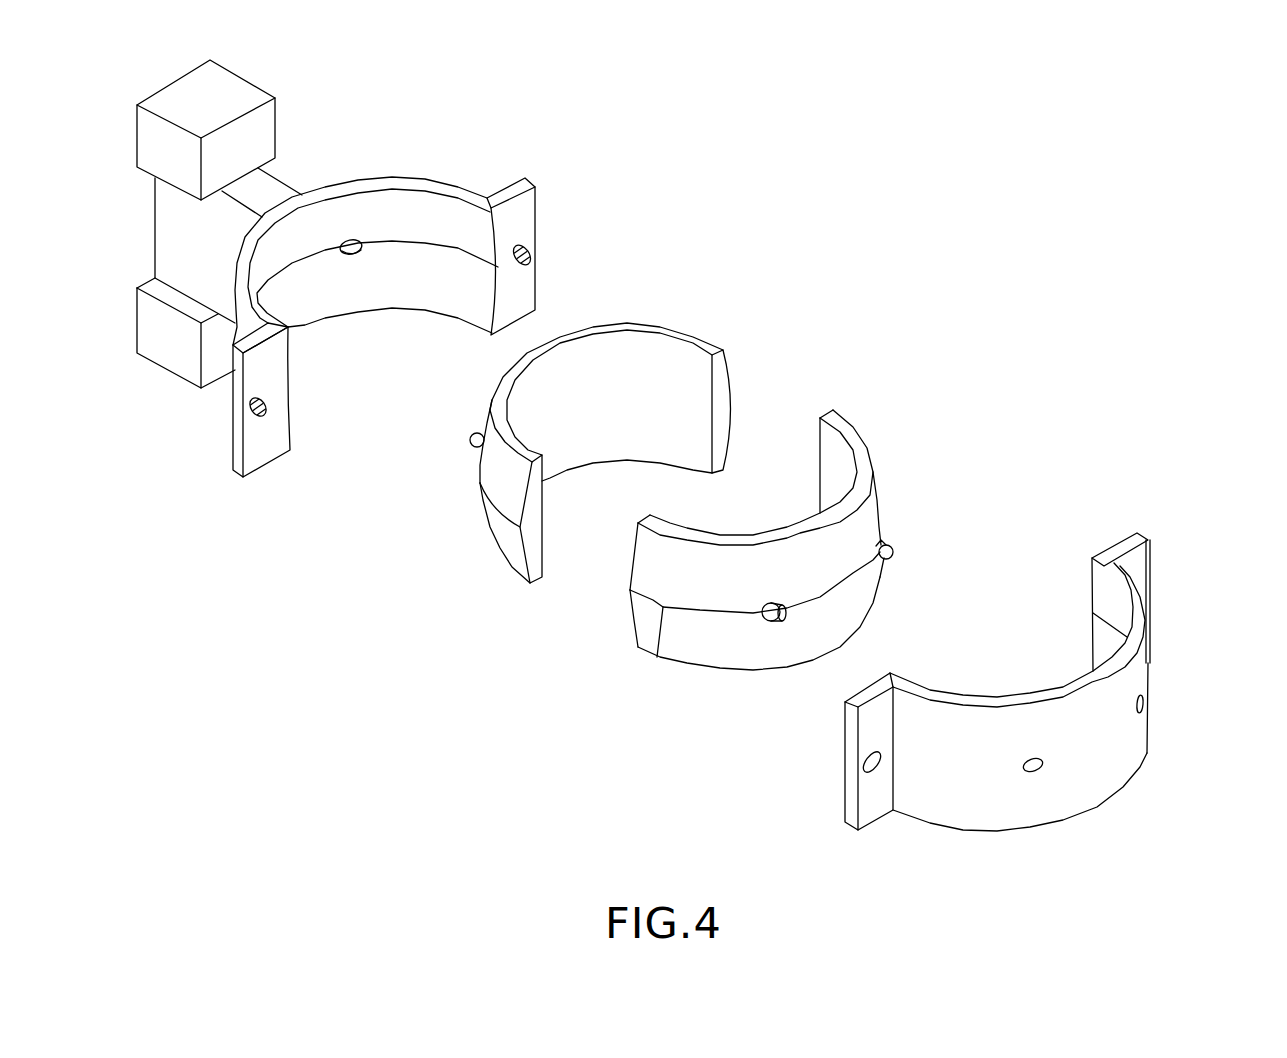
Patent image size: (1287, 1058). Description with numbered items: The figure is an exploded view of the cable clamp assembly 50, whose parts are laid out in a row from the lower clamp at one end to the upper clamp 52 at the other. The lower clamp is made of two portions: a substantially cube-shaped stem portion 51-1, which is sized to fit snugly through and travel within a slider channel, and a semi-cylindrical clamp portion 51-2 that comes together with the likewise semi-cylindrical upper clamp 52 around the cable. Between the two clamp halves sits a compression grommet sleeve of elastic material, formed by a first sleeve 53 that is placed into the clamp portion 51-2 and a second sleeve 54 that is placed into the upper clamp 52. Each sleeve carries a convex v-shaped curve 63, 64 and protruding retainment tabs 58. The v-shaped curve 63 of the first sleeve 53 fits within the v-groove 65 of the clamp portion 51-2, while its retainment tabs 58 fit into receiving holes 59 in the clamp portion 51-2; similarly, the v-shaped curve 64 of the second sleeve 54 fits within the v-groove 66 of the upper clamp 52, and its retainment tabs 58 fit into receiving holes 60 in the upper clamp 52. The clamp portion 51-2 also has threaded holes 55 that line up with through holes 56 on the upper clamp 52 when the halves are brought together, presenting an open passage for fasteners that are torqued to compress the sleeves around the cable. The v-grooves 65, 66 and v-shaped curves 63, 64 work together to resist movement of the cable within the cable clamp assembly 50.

The cable clamp assembly 50 is at (967, 189).
The stem portion 51-1 is at (235, 88).
The clamp portion 51-2 is at (513, 188).
The upper clamp 52 is at (1132, 540).
The first sleeve 53 is at (678, 335).
The second sleeve 54 is at (840, 423).
The threaded holes 55 is at (530, 254).
The through holes 56 is at (867, 770).
The retainment tabs 58 is at (470, 441).
The receiving holes 59 is at (350, 238).
The receiving holes 60 is at (1147, 705).
The v-shaped curve 63 is at (503, 513).
The v-shaped curve 64 is at (663, 608).
The v-groove 65 is at (467, 253).
The v-groove 66 is at (1127, 637).